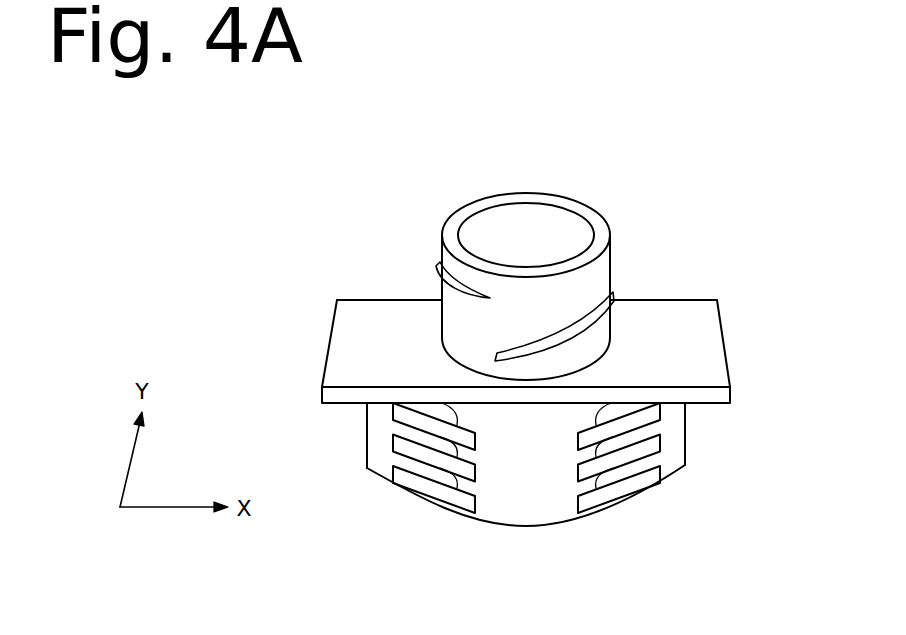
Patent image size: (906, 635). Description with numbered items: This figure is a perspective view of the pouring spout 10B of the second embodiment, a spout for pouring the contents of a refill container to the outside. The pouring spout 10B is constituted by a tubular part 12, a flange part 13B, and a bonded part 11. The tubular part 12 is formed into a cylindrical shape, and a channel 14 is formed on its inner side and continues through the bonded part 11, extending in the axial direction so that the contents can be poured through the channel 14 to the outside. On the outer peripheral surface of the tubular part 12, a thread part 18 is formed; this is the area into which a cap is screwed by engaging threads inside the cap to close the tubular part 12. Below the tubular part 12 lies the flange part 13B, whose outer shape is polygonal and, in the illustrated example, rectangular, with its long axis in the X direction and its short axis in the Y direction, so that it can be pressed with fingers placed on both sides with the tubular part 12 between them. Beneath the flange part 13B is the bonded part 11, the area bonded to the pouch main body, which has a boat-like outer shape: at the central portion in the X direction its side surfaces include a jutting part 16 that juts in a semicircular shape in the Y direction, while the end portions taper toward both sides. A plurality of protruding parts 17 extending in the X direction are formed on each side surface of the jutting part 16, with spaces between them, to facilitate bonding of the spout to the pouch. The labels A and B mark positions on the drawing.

The pouring spout 10B is at (350, 193).
The bonded part 11 is at (560, 538).
The tubular part 12 is at (602, 233).
The flange part 13B is at (683, 333).
The channel 14 is at (477, 245).
The jutting part 16 is at (517, 516).
The protruding part 17 is at (403, 467).
The thread part 18 is at (615, 300).
The position A is at (455, 515).
The position B is at (553, 197).